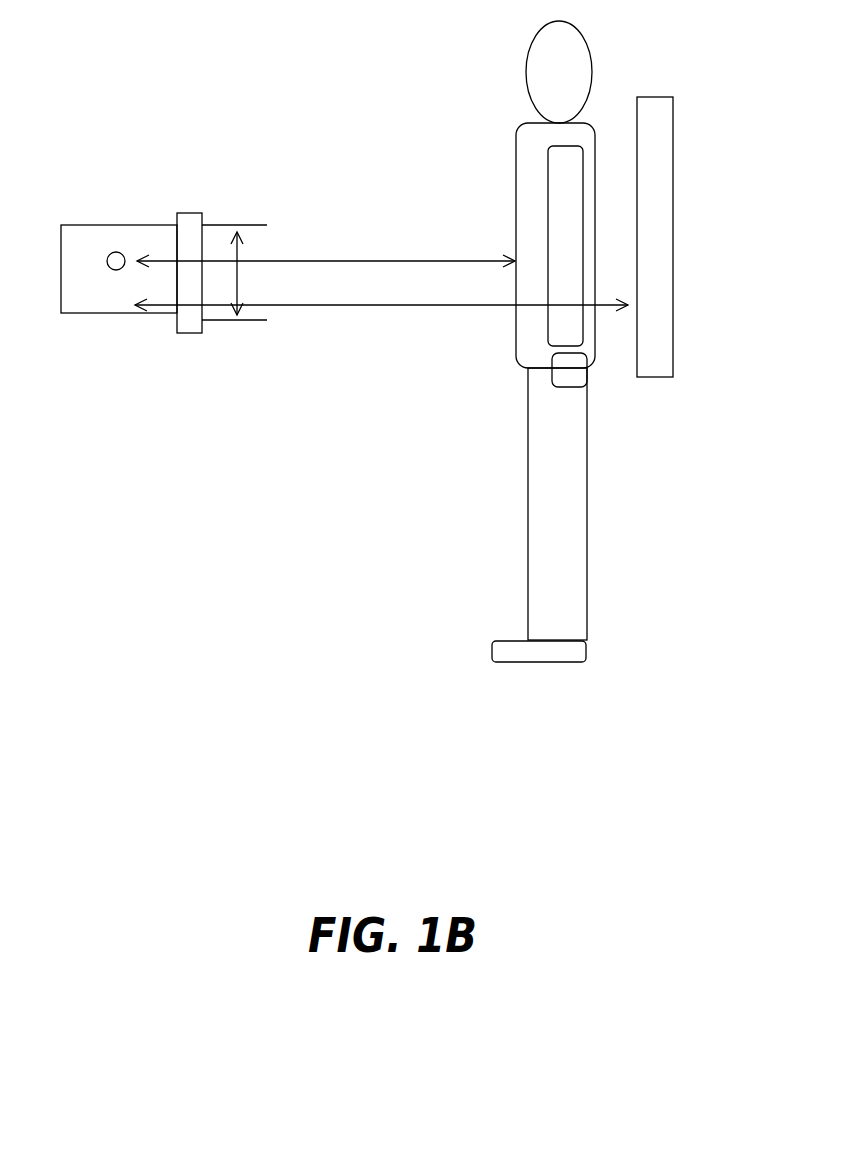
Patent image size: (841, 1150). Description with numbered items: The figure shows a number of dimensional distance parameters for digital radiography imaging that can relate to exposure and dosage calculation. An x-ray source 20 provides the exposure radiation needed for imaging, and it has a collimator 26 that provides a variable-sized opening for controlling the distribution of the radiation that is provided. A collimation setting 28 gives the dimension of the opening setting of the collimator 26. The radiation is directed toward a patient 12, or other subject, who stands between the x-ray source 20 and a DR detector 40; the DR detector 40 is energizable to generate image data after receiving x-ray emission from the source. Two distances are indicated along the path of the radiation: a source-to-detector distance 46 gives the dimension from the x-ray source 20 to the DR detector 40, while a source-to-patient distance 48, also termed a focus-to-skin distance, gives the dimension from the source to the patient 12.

The patient 12 is at (570, 603).
The x-ray source 20 is at (96, 222).
The collimator 26 is at (183, 331).
The collimation setting 28 is at (238, 292).
The DR detector 40 is at (673, 122).
The source-to-detector distance 46 is at (387, 307).
The source-to-patient distance 48 is at (376, 260).